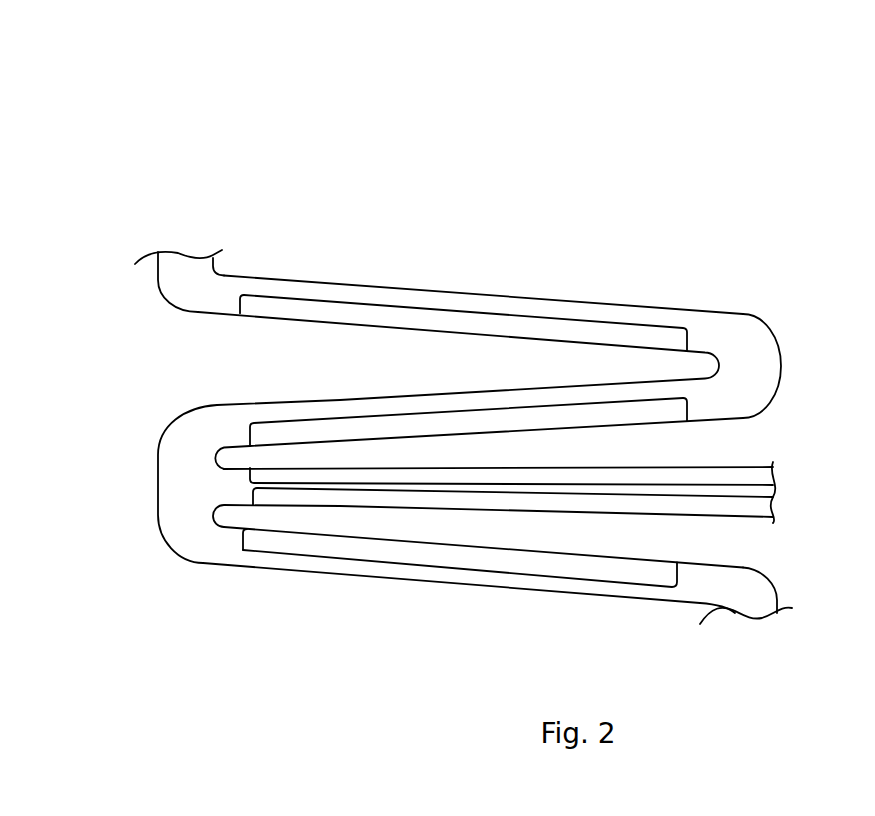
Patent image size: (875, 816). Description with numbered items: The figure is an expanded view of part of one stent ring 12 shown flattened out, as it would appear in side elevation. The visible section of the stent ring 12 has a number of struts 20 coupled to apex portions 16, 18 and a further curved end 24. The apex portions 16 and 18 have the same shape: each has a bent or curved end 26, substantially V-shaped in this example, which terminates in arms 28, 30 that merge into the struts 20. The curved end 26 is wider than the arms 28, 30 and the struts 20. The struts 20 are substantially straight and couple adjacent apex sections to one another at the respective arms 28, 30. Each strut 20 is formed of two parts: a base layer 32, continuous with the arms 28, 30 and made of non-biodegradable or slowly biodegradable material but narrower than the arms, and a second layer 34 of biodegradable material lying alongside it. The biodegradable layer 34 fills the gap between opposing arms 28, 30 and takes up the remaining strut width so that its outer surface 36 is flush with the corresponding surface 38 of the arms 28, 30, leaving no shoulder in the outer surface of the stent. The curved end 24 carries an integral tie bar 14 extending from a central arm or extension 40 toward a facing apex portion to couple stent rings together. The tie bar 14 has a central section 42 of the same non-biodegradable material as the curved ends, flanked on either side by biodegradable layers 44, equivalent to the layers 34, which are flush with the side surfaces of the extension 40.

The stent ring 12 is at (577, 166).
The tie bar 14 is at (519, 513).
The apex portion 16 is at (153, 252).
The apex portion 18 is at (772, 364).
The strut 20 is at (525, 290).
The curved end 24 is at (153, 490).
The bent or curved end 26 is at (782, 336).
The arm 28 is at (704, 325).
The arm 30 is at (226, 295).
The base layer 32 is at (408, 287).
The second layer 34 is at (450, 310).
The outer surface 36 is at (250, 272).
The surface 38 is at (238, 312).
The central arm or extension 40 is at (232, 487).
The central section 42 is at (745, 493).
The biodegradable layer 44 is at (552, 471).